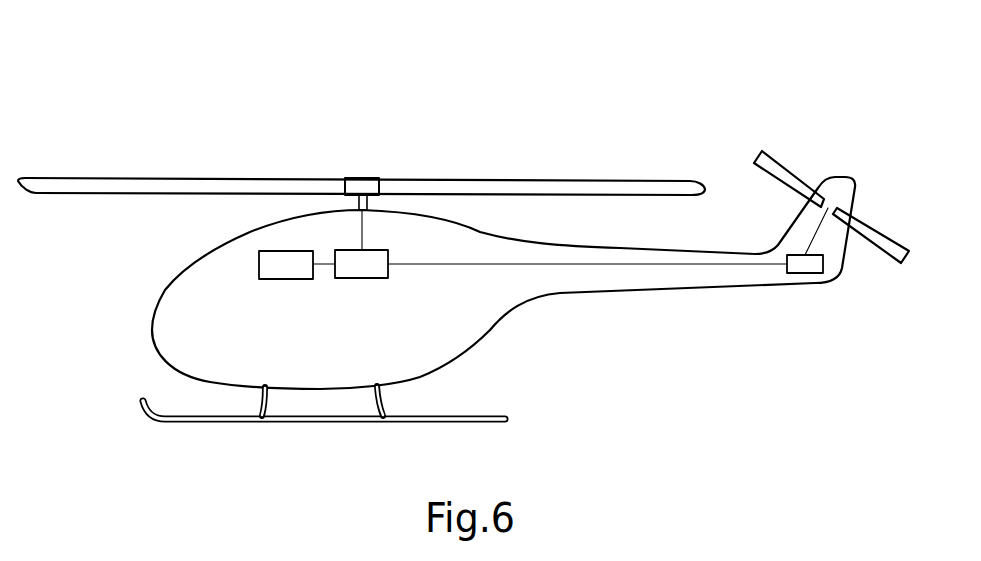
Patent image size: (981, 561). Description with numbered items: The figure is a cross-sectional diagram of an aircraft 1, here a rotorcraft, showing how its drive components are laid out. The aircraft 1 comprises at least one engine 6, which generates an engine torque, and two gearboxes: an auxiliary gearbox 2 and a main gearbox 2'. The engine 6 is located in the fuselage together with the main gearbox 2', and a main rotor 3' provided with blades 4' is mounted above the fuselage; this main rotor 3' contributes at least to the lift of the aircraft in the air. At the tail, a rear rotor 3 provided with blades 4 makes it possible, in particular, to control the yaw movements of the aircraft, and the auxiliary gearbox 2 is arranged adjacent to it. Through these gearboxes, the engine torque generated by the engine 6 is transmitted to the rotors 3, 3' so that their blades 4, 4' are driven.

The aircraft 1 is at (636, 382).
The auxiliary gearbox 2 is at (814, 291).
The main gearbox 2' is at (561, 282).
The rotor 3 is at (846, 155).
The main rotor 3' is at (373, 117).
The blades 4 is at (885, 206).
The blades 4' is at (373, 134).
The engine 6 is at (290, 280).